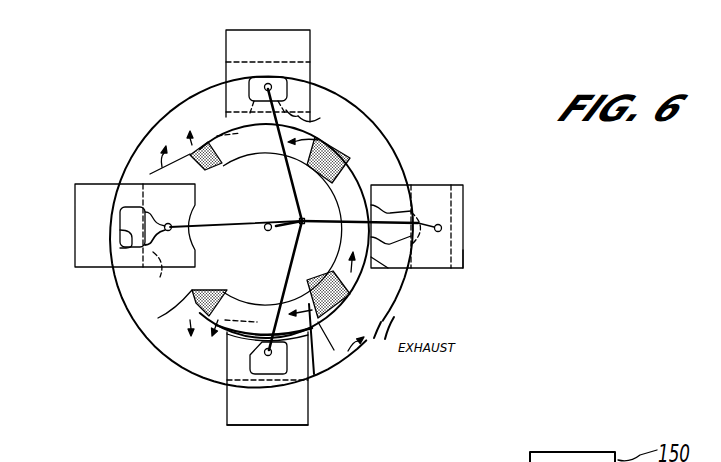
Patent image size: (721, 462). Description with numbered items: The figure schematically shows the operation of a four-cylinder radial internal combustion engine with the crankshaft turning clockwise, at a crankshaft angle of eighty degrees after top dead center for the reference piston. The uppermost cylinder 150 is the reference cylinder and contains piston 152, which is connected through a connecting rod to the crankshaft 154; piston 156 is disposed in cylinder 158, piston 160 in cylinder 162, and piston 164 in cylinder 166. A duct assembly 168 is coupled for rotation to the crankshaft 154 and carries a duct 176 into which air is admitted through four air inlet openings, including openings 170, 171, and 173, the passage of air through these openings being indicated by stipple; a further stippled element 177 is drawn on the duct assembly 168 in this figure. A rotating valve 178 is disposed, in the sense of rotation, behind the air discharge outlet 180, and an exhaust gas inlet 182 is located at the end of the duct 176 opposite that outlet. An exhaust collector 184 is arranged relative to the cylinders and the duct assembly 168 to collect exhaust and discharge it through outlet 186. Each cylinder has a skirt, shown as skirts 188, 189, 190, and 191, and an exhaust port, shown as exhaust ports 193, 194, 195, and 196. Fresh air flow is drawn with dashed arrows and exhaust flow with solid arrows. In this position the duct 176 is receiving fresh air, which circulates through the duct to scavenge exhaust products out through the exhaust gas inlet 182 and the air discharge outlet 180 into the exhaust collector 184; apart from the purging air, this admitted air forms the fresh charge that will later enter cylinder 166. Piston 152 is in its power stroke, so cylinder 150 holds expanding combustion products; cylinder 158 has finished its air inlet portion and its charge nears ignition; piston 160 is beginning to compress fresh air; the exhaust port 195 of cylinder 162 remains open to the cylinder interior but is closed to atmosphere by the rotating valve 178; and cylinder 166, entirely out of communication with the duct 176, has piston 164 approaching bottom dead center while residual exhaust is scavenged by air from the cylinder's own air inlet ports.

The cylinder 150 is at (310, 52).
The piston 152 is at (320, 92).
The crankshaft 154 is at (266, 232).
The piston 156 is at (458, 186).
The cylinder 158 is at (458, 272).
The piston 160 is at (315, 387).
The cylinder 162 is at (260, 425).
The piston 164 is at (160, 268).
The cylinder 166 is at (92, 200).
The duct assembly 168 is at (372, 170).
The air inlet opening 170 is at (212, 170).
The air inlet opening 171 is at (413, 121).
The air inlet opening 173 is at (205, 290).
The duct 176 is at (350, 238).
The vane seal (lower right) 177 is at (376, 325).
The rotating valve 178 is at (318, 366).
The air discharge outlet 180 is at (173, 315).
The exhaust gas inlet 182 is at (204, 122).
The exhaust collector 184 is at (418, 312).
The outlet 186 is at (370, 348).
The skirt 188 is at (313, 120).
The skirt 189 is at (396, 270).
The skirt 190 is at (235, 352).
The skirt 191 is at (170, 184).
The exhaust port 193 is at (250, 87).
The exhaust port 194 is at (412, 242).
The exhaust port 195 is at (253, 366).
The exhaust port 196 is at (123, 240).